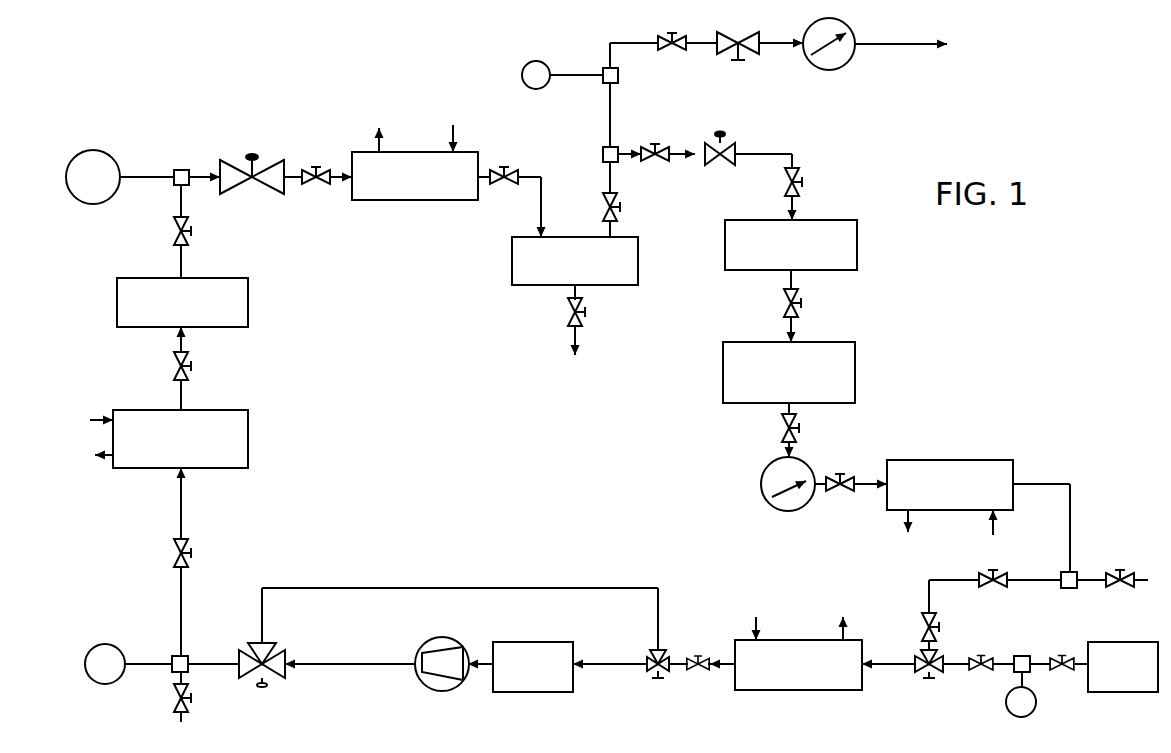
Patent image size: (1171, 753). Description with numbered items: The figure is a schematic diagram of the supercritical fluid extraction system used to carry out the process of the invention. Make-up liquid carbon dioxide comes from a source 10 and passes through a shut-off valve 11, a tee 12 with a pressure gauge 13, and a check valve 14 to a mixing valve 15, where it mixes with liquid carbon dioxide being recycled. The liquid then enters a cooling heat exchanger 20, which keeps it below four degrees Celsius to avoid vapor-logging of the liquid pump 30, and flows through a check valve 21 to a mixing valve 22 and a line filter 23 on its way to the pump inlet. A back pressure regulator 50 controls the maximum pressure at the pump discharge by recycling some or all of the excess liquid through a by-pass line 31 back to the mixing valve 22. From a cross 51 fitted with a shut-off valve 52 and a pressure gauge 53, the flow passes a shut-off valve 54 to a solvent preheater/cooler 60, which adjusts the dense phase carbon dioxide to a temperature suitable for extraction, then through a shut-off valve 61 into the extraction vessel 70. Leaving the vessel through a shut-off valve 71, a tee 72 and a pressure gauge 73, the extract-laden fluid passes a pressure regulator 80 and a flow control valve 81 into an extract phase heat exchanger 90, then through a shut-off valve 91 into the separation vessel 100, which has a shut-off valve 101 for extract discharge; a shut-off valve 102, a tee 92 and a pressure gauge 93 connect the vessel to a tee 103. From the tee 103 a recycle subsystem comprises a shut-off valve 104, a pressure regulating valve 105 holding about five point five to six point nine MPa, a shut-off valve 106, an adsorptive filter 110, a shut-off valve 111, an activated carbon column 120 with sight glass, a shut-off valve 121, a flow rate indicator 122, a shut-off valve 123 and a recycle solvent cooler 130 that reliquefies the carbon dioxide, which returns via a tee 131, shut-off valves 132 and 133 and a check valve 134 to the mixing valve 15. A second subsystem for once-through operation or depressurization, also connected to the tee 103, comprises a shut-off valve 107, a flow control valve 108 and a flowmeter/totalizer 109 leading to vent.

The source of make-up LCO2 10 is at (1120, 642).
The shut-off valve 11 is at (1076, 634).
The tee 12 is at (1042, 634).
The pressure gauge 13 is at (1036, 702).
The check valve 14 is at (981, 676).
The mixing valve 15 is at (920, 676).
The cooling heat exchanger 20 is at (748, 640).
The check valve 21 is at (698, 671).
The mixing valve 22 is at (664, 652).
The line filter 23 is at (568, 645).
The liquid pump 30 is at (417, 652).
The by-pass line 31 is at (470, 588).
The back pressure regulator 50 is at (285, 658).
The cross 51 is at (186, 656).
The shut-off valve 52 is at (188, 698).
The pressure gauge 53 is at (120, 645).
The shut-off valve 54 is at (192, 546).
The solvent preheater/cooler 60 is at (225, 410).
The shut-off valve 61 is at (192, 362).
The extraction vessel 70 is at (225, 278).
The shut-off valve 71 is at (192, 236).
The tee 72 is at (185, 170).
The pressure gauge 73 is at (113, 160).
The pressure regulator 80 is at (232, 162).
The flow control valve 81 is at (318, 168).
The extract phase heat exchanger 90 is at (430, 200).
The shut-off valve 91 is at (510, 168).
The tee 92 is at (604, 68).
The pressure gauge 93 is at (522, 72).
The separation vessel 100 is at (512, 252).
The shut-off valve 101 is at (566, 322).
The shut-off valve 102 is at (617, 208).
The tee 103 is at (603, 150).
The shut-off valve 104 is at (651, 144).
The pressure regulating valve 105 is at (710, 144).
The shut-off valve 106 is at (785, 182).
The shut-off valve 107 is at (668, 52).
The flow control valve 108 is at (733, 55).
The flowmeter/totalizer 109 is at (850, 58).
The adsorptive filter 110 is at (746, 220).
The shut-off valve 111 is at (800, 300).
The activated carbon column 120 is at (840, 342).
The shut-off valve 121 is at (782, 428).
The flow rate indicator 122 is at (766, 473).
The shut-off valve 123 is at (872, 440).
The recycle solvent cooler 130 is at (952, 460).
The tee 131 is at (1072, 572).
The shut-off valve 132 is at (1116, 568).
The shut-off valve 133 is at (996, 588).
The check valve 134 is at (937, 624).